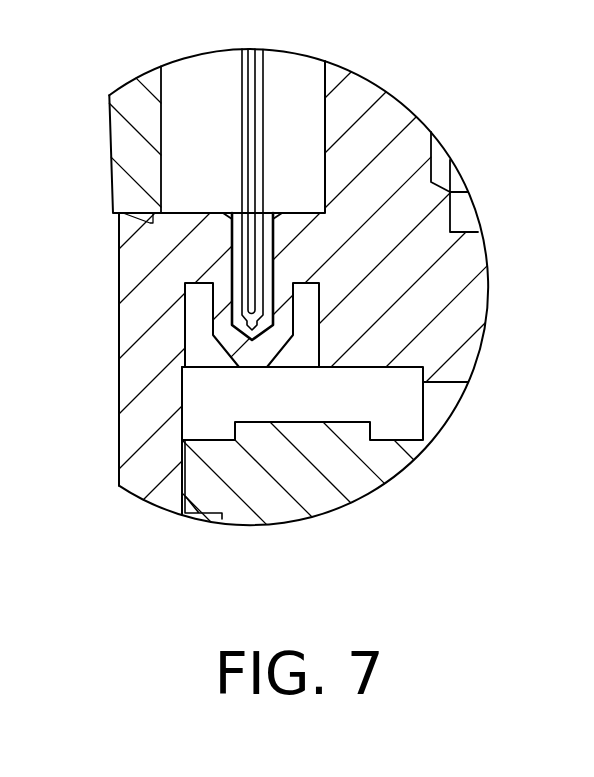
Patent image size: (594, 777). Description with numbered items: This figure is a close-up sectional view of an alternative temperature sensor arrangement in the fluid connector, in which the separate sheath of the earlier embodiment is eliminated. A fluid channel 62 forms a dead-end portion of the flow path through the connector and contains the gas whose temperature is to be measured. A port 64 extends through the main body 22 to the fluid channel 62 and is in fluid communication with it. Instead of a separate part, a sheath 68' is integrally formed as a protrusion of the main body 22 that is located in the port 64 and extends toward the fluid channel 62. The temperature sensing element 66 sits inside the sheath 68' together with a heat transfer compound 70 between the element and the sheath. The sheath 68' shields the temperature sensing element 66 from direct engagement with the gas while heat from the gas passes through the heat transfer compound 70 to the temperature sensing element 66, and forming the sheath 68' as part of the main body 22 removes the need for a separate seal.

The main body 22 is at (152, 437).
The fluid channel 62 is at (383, 410).
The port 64 is at (200, 352).
The temperature sensing element 66 is at (250, 290).
The sheath 68' is at (174, 326).
The heat transfer compound 70 is at (270, 322).